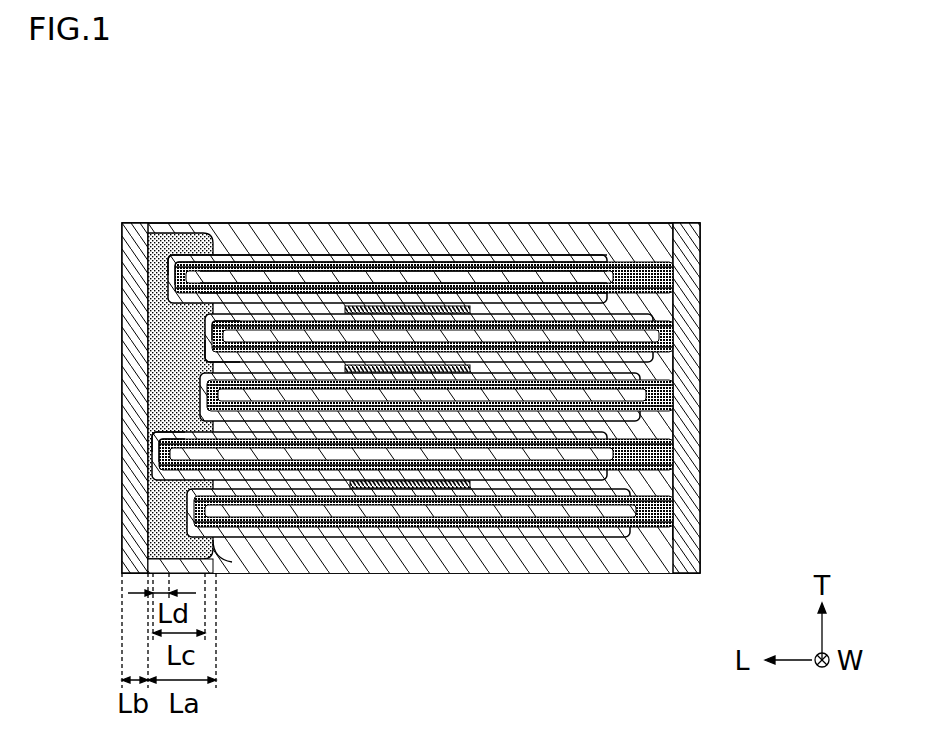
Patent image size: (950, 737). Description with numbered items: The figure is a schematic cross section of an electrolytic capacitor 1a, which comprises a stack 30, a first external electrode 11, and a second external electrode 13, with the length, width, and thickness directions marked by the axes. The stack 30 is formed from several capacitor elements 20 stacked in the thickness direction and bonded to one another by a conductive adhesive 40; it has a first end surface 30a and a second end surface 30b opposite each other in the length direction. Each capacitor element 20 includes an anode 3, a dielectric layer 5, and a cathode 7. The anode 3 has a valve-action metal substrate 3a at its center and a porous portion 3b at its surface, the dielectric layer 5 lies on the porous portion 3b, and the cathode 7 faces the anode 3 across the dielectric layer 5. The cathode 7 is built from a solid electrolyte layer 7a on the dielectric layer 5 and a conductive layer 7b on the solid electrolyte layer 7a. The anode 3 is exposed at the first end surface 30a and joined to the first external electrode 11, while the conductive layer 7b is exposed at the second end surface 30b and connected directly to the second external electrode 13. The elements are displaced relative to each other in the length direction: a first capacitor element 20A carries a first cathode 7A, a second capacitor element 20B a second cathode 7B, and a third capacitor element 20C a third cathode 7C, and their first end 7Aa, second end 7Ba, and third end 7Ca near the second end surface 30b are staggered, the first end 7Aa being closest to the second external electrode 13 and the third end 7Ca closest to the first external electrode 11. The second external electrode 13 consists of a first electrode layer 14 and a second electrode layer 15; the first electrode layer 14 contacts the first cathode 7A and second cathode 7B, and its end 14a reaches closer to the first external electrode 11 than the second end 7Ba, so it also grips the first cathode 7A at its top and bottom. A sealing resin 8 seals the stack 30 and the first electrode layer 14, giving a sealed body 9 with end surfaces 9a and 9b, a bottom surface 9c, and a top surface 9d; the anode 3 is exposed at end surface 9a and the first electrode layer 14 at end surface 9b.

The electrolytic capacitor 1a is at (744, 170).
The anode 3 is at (415, 158).
The valve-action metal substrate 3a is at (400, 289).
The porous portion 3b is at (442, 297).
The dielectric layer 5 is at (353, 277).
The cathode 7 is at (265, 158).
The solid electrolyte layer 7a is at (302, 266).
The conductive layer 7b is at (258, 256).
The first cathode 7A is at (160, 440).
The first end 7Aa is at (160, 462).
The second cathode 7B is at (178, 258).
The second end 7Ba is at (178, 268).
The third cathode 7C is at (210, 358).
The third end 7Ca is at (210, 318).
The sealing resin 8 is at (610, 558).
The sealed body 9 is at (618, 213).
The end surface 9a is at (686, 306).
The end surface 9b is at (150, 545).
The bottom surface 9c is at (540, 573).
The top surface 9d is at (540, 224).
The first external electrode 11 is at (684, 224).
The second external electrode 13 is at (93, 153).
The first electrode layer 14 is at (167, 245).
The end 14a is at (218, 546).
The second electrode layer 15 is at (132, 222).
The capacitor element 20 is at (462, 118).
The first capacitor element 20A is at (142, 474).
The second capacitor element 20B is at (158, 290).
The third capacitor element 20C is at (192, 349).
The stack 30 is at (455, 557).
The first end surface 30a is at (674, 513).
The second end surface 30b is at (200, 510).
The conductive adhesive 40 is at (405, 484).